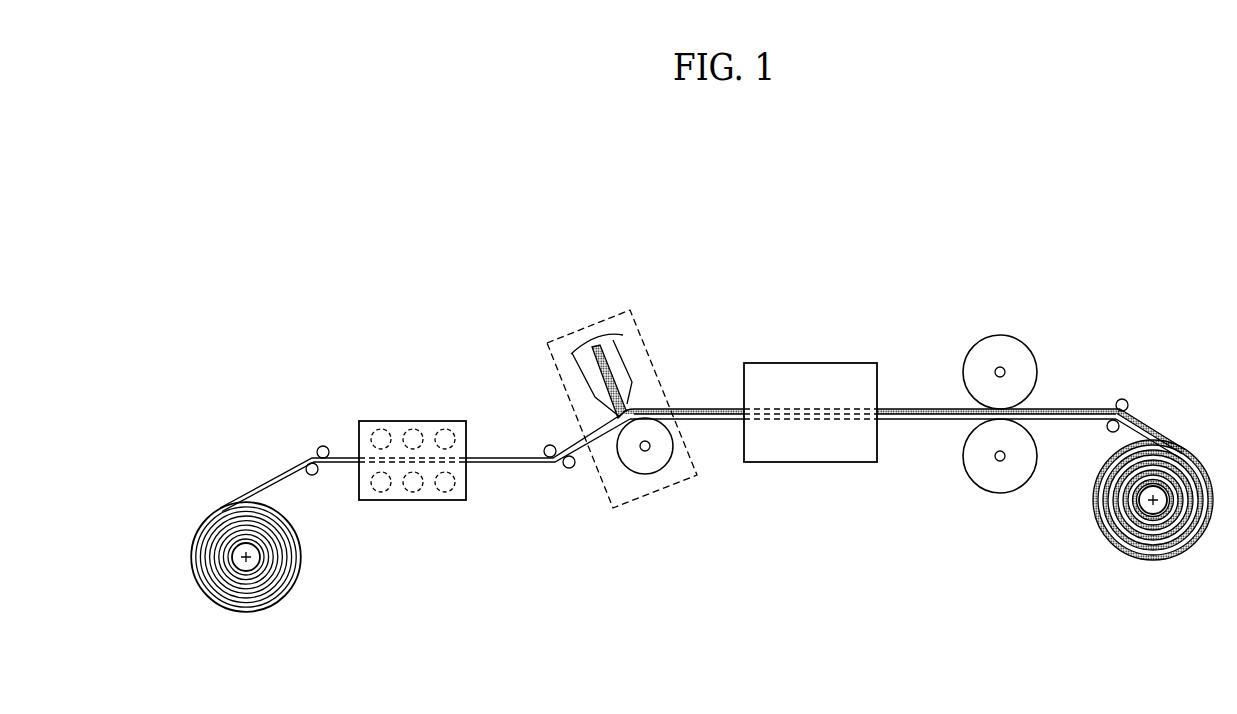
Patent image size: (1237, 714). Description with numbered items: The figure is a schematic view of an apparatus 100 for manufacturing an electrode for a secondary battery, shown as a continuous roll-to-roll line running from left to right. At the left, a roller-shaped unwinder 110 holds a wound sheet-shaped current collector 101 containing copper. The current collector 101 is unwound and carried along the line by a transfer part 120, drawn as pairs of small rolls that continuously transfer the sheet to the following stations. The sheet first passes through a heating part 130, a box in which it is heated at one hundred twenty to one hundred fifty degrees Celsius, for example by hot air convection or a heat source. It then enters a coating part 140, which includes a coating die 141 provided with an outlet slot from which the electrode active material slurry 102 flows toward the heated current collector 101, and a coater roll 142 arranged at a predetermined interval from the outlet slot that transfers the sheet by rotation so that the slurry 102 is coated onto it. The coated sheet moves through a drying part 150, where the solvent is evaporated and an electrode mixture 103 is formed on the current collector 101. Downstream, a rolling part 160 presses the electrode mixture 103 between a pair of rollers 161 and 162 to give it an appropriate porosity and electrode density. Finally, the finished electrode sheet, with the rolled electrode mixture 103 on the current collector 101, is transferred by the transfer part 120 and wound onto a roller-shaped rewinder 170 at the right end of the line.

The apparatus for manufacturing an electrode 100 is at (300, 253).
The sheet-shaped current collector 101 is at (260, 482).
The electrode active material slurry 102 is at (701, 407).
The electrode mixture 103 is at (917, 407).
The unwinder 110 is at (275, 623).
The transfer part 120 is at (320, 489).
The heating part 130 is at (414, 407).
The coating part 140 is at (600, 402).
The coating die 141 is at (597, 372).
The coater roll 142 is at (641, 463).
The drying part 150 is at (810, 349).
The rolling part 160 is at (1021, 400).
The roller 161 is at (998, 482).
The roller 162 is at (1020, 355).
The rewinder 170 is at (1104, 553).